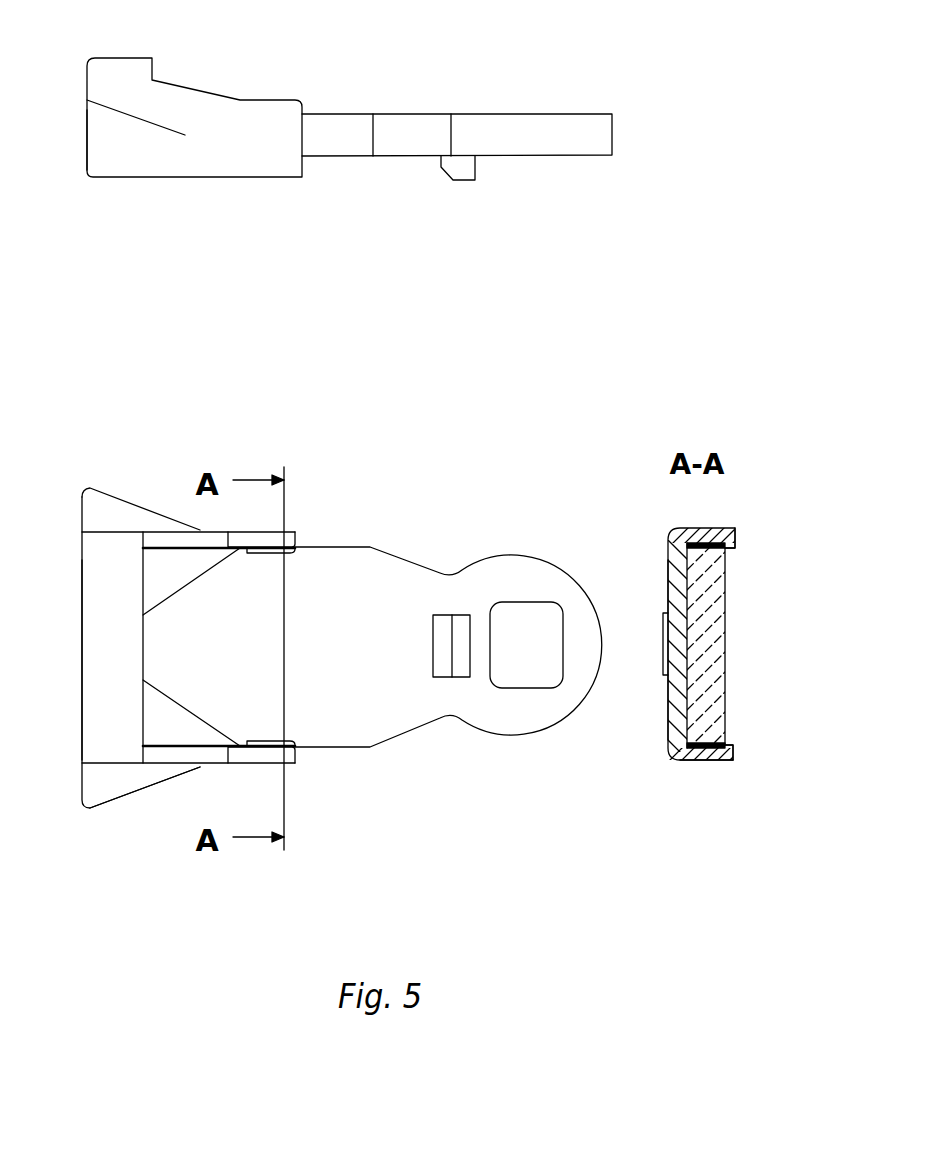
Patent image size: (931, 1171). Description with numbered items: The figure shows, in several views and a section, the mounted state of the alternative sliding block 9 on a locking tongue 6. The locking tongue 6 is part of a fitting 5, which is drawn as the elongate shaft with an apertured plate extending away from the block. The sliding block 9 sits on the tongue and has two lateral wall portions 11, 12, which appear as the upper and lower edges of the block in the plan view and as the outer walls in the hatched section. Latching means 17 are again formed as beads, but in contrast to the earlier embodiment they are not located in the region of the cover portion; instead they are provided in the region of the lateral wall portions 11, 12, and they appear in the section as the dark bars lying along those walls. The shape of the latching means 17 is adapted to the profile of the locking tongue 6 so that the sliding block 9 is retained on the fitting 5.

The fitting 5 is at (490, 133).
The locking tongue 6 is at (210, 83).
The sliding block 9 is at (135, 150).
The lateral wall portion 11 is at (250, 758).
The lateral wall portion 12 is at (262, 535).
The latching means 17 is at (268, 548).